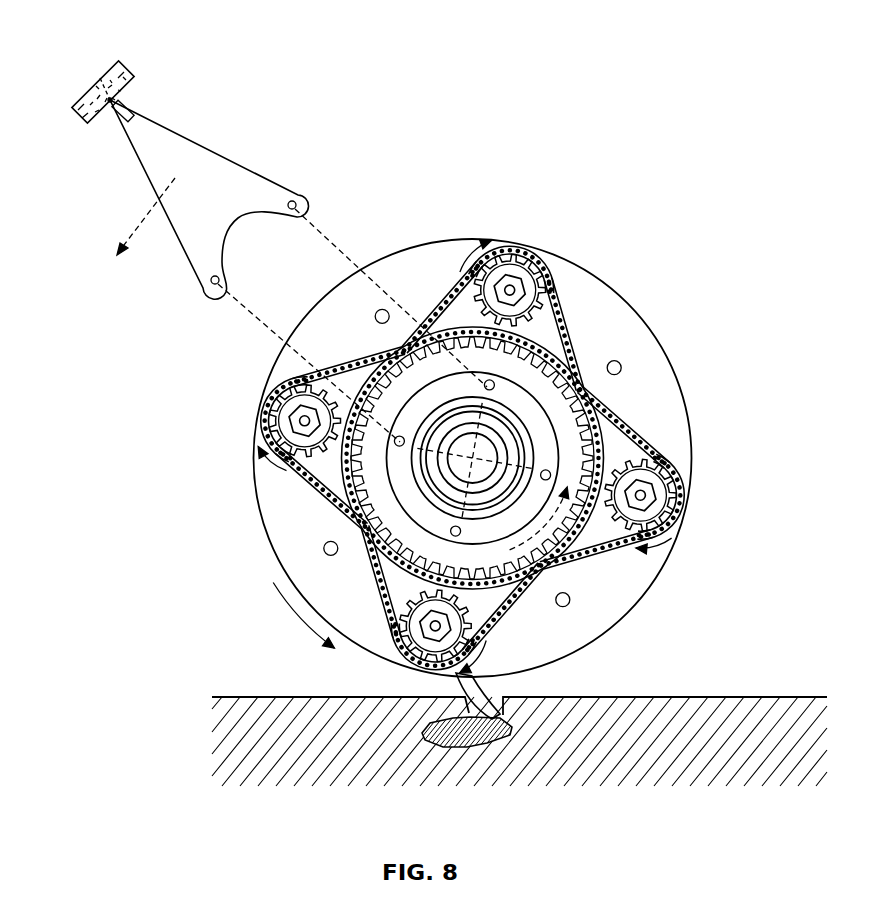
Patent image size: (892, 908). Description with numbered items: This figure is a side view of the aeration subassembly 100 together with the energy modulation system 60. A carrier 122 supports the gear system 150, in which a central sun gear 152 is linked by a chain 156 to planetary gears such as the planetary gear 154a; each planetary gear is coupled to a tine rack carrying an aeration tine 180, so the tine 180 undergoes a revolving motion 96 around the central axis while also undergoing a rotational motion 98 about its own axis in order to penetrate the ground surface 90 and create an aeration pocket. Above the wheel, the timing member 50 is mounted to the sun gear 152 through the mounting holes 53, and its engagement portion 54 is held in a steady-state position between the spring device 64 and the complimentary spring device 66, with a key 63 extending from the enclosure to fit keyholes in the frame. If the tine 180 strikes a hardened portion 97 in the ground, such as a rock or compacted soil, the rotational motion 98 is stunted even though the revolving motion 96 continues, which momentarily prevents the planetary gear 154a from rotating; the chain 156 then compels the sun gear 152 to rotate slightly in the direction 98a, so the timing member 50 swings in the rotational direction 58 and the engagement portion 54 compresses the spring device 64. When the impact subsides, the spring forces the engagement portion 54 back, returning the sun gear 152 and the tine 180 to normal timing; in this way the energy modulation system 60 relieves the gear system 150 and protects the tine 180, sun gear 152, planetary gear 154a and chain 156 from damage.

The timing member 50 is at (186, 146).
The mounting holes 53 is at (285, 190).
The engagement portion 54 is at (114, 99).
The rotational direction 58 is at (140, 218).
The energy modulation system 60 is at (90, 134).
The key 63 is at (100, 77).
The spring device 64 is at (76, 104).
The complimentary spring device 66 is at (119, 62).
The ground surface 90 is at (720, 696).
The revolving motion 96 is at (312, 630).
The hardened portion 97 is at (507, 722).
The rotational motion 98 is at (481, 649).
The direction 98a is at (572, 518).
The aeration subassembly 100 is at (221, 350).
The carrier 122 is at (566, 258).
The gear system 150 is at (265, 481).
The sun gear 152 is at (288, 535).
The planetary gear 154a is at (386, 594).
The chain 156 is at (583, 646).
The aeration tine 180 is at (480, 692).